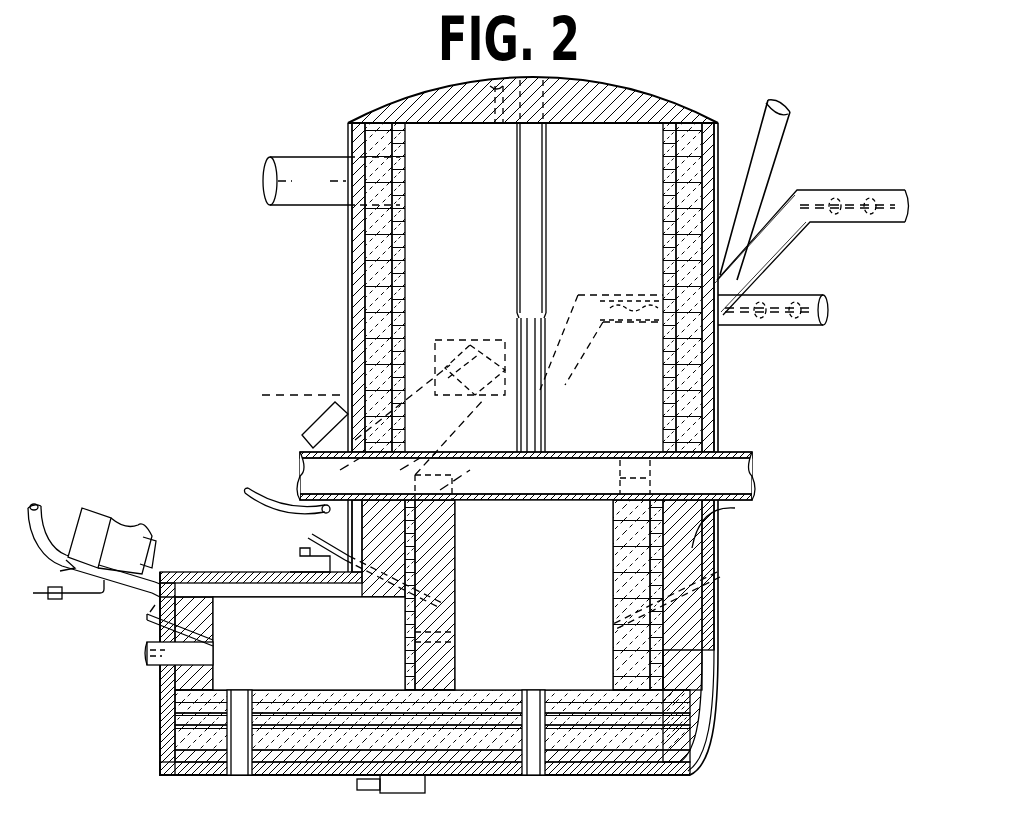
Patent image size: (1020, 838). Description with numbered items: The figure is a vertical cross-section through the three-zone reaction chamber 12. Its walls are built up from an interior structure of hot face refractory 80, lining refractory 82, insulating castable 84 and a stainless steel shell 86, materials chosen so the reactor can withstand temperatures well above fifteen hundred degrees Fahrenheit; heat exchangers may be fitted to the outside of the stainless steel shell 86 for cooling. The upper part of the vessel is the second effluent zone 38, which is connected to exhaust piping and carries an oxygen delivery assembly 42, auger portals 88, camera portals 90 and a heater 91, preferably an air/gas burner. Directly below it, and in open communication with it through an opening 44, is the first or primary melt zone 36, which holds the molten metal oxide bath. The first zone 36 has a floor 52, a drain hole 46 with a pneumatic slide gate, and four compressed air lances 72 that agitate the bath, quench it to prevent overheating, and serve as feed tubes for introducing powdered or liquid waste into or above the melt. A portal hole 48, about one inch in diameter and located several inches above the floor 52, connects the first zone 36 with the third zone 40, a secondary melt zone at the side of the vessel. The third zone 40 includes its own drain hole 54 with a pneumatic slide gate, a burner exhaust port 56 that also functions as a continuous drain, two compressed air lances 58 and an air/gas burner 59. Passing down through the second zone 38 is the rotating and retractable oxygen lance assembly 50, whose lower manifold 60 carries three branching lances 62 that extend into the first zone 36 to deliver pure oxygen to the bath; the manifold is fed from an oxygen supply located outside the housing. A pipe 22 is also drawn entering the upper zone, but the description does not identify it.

The reaction chamber 12 is at (630, 85).
The feed inlet pipe 22 is at (326, 198).
The first melt zone 36 is at (597, 677).
The second effluent zone 38 is at (475, 287).
The third zone 40 is at (317, 660).
The oxygen delivery assembly 42 is at (538, 194).
The opening 44 is at (617, 433).
The drain hole 46 is at (541, 777).
The portal hole 48 is at (453, 633).
The oxygen lance assembly 50 is at (560, 547).
The floor 52 is at (498, 673).
The drain hole 54 is at (237, 777).
The burner exhaust port 56 is at (148, 666).
The compressed air lances 58 is at (148, 620).
The air/gas burner 59 is at (50, 510).
The lower manifold 60 is at (518, 519).
The branching lances 62 is at (497, 575).
The compressed air lances 72 is at (305, 542).
The hot face refractory 80 is at (400, 223).
The lining refractory 82 is at (663, 260).
The insulating castable 84 is at (348, 276).
The stainless steel shell 86 is at (348, 326).
The auger portals 88 is at (840, 193).
The camera portals 90 is at (488, 90).
The heater 91 is at (320, 420).